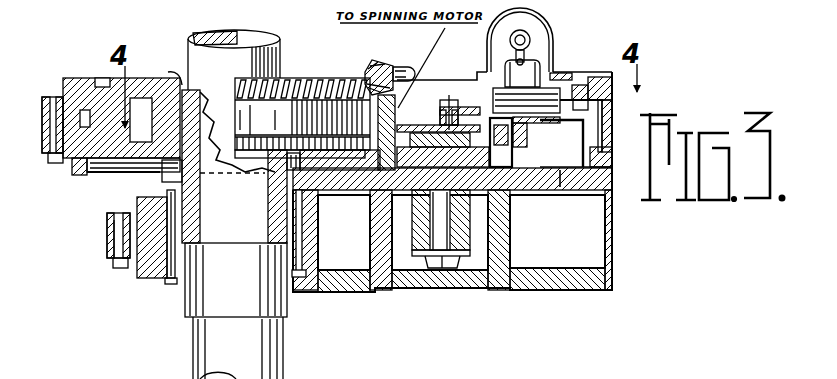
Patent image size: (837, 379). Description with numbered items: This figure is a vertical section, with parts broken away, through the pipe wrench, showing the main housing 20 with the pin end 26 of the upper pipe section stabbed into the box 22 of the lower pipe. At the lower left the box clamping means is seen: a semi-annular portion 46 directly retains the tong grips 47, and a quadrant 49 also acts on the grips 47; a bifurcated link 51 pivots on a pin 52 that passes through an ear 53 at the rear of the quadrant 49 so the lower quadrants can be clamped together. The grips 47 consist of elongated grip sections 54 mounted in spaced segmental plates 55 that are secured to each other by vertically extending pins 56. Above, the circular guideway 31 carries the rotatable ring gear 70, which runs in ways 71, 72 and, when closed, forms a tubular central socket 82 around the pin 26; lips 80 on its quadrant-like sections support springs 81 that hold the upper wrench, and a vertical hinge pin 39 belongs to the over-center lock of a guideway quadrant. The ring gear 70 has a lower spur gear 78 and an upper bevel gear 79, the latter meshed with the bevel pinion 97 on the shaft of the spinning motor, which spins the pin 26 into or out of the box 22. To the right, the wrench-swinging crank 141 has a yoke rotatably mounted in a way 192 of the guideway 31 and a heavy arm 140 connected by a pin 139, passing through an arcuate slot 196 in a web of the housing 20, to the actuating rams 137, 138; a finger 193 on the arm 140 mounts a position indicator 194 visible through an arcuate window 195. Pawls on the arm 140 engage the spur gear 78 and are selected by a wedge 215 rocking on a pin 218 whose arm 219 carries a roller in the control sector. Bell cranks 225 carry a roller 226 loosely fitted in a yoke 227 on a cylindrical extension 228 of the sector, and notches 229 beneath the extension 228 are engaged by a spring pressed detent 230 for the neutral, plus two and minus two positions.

The main housing 20 is at (480, 290).
The box 22 is at (185, 300).
The pin end 26 is at (232, 65).
The circular guideway 31 is at (418, 80).
The vertical hinge pin 39 is at (52, 97).
The semi-annular portion 46 is at (323, 250).
The tong grips 47 is at (313, 293).
The quadrant 49 is at (142, 277).
The bifurcated link 51 is at (107, 218).
The pin 52 is at (108, 238).
The ear 53 is at (107, 248).
The grip sections 54 is at (174, 281).
The segmental plates 55 is at (170, 175).
The pins 56 is at (303, 232).
The ring gear 70 is at (174, 72).
The way 71 is at (96, 80).
The way 72 is at (75, 175).
The spur gear 78 is at (282, 128).
The bevel gear 79 is at (288, 70).
The lips 80 is at (133, 170).
The springs 81 is at (144, 125).
The central socket 82 is at (175, 70).
The bevel pinion 97 is at (378, 60).
The actuating ram 137 is at (512, 225).
The actuating ram 138 is at (512, 245).
The pin 139 is at (428, 215).
The heavy arm 140 is at (512, 205).
The wrench-swinging crank 141 is at (492, 162).
The way 192 is at (90, 170).
The finger 193 is at (563, 190).
The position indicator 194 is at (590, 128).
The arcuate window 195 is at (612, 133).
The arcuate slot 196 is at (378, 205).
The wedge 215 is at (503, 132).
The pin 218 is at (505, 142).
The arm 219 is at (446, 100).
The bell cranks 225 is at (540, 50).
The roller 226 is at (540, 66).
The yoke 227 is at (495, 88).
The cylindrical extension 228 is at (527, 134).
The notches 229 is at (538, 140).
The spring pressed detent 230 is at (538, 158).